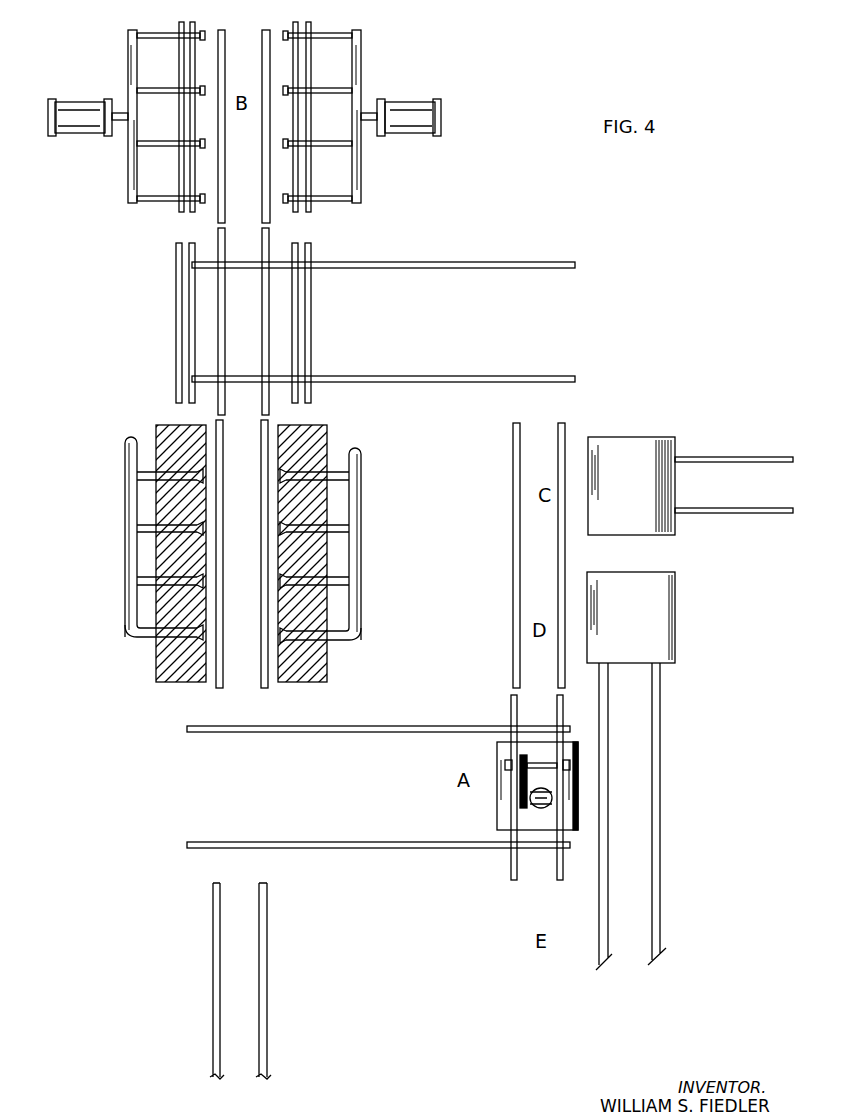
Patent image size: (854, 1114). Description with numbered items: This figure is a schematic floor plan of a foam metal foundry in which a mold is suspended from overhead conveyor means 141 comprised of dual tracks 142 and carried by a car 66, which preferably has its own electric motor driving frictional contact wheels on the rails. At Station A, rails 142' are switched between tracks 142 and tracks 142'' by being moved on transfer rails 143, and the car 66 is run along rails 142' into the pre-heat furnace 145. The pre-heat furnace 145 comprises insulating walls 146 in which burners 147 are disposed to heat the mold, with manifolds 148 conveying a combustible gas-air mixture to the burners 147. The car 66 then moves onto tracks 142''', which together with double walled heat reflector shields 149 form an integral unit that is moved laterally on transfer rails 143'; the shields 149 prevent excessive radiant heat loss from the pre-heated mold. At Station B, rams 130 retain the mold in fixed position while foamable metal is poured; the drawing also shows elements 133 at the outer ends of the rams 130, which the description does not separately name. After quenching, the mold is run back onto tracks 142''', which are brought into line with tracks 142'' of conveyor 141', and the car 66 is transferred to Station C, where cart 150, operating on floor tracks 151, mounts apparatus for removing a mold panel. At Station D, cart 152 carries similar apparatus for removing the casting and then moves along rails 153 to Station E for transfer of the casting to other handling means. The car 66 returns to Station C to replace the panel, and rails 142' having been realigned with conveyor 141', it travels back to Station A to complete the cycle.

The car 66 is at (498, 812).
The rams 130 is at (163, 197).
The air cylinder 133 is at (77, 135).
The overhead conveyor means 141 is at (191, 981).
The conveyor 141' is at (500, 555).
The dual tracks 142 is at (212, 463).
The rails 142' is at (523, 810).
The tracks 142'' is at (512, 555).
The tracks 142''' is at (247, 321).
The transfer rails 143 is at (378, 763).
The transfer rails 143' is at (383, 322).
The pre-heat furnace 145 is at (226, 541).
The insulating walls 146 is at (163, 430).
The burners 147 is at (280, 477).
The manifolds 148 is at (127, 490).
The double walled heat reflector shields 149 is at (177, 339).
The cart 150 is at (633, 445).
The floor tracks 151 is at (715, 462).
The cart 152 is at (668, 622).
The rails 153 is at (602, 900).